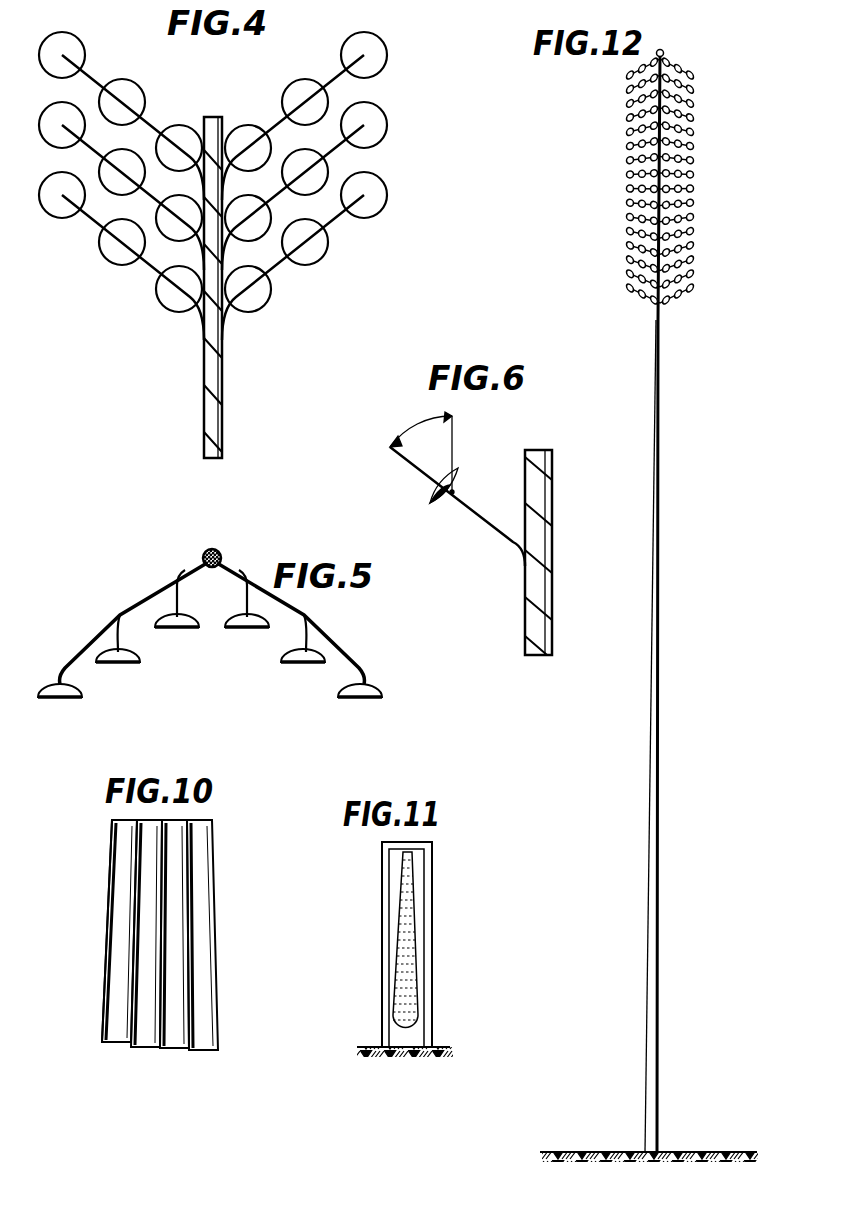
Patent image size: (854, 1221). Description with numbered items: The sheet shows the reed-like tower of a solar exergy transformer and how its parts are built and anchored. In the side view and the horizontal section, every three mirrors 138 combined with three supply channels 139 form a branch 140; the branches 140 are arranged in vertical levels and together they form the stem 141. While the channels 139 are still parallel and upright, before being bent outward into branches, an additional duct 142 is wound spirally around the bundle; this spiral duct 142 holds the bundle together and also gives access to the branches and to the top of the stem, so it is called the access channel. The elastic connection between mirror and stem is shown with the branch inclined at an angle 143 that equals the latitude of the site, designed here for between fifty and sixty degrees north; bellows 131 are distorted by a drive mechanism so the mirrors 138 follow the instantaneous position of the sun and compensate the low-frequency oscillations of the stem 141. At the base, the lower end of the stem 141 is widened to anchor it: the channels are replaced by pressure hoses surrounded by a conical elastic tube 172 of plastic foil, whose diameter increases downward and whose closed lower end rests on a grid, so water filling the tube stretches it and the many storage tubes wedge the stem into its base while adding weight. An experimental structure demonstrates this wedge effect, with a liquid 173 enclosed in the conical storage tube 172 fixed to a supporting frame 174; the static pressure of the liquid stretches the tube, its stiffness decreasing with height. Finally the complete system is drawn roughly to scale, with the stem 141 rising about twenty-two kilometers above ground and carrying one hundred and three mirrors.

In FIG. 6, the bellows 131 is at (449, 503).
In FIG. 4, the mirror 138 is at (381, 72).
In FIG. 5, the mirror 138 is at (338, 688).
In FIG. 6, the mirror 138 is at (458, 470).
In FIG. 12, the mirror 138 is at (626, 177).
In FIG. 4, the supply channel 139 is at (337, 219).
In FIG. 5, the supply channel 139 is at (350, 646).
In FIG. 10, the supply channel 139 is at (212, 846).
In FIG. 4, the branch 140 is at (228, 317).
In FIG. 5, the branch 140 is at (175, 574).
In FIG. 6, the branch 140 is at (513, 543).
In FIG. 12, the branch 140 is at (628, 207).
In FIG. 4, the stem 141 is at (216, 422).
In FIG. 5, the stem 141 is at (221, 553).
In FIG. 6, the stem 141 is at (538, 588).
In FIG. 12, the stem 141 is at (655, 787).
In FIG. 4, the spiral duct 142 is at (212, 352).
In FIG. 6, the angle 143 is at (420, 425).
In FIG. 10, the elastic tube 172 is at (112, 918).
In FIG. 11, the elastic tube 172 is at (415, 927).
In FIG. 11, the liquid 173 is at (410, 900).
In FIG. 11, the supporting frame 174 is at (431, 983).